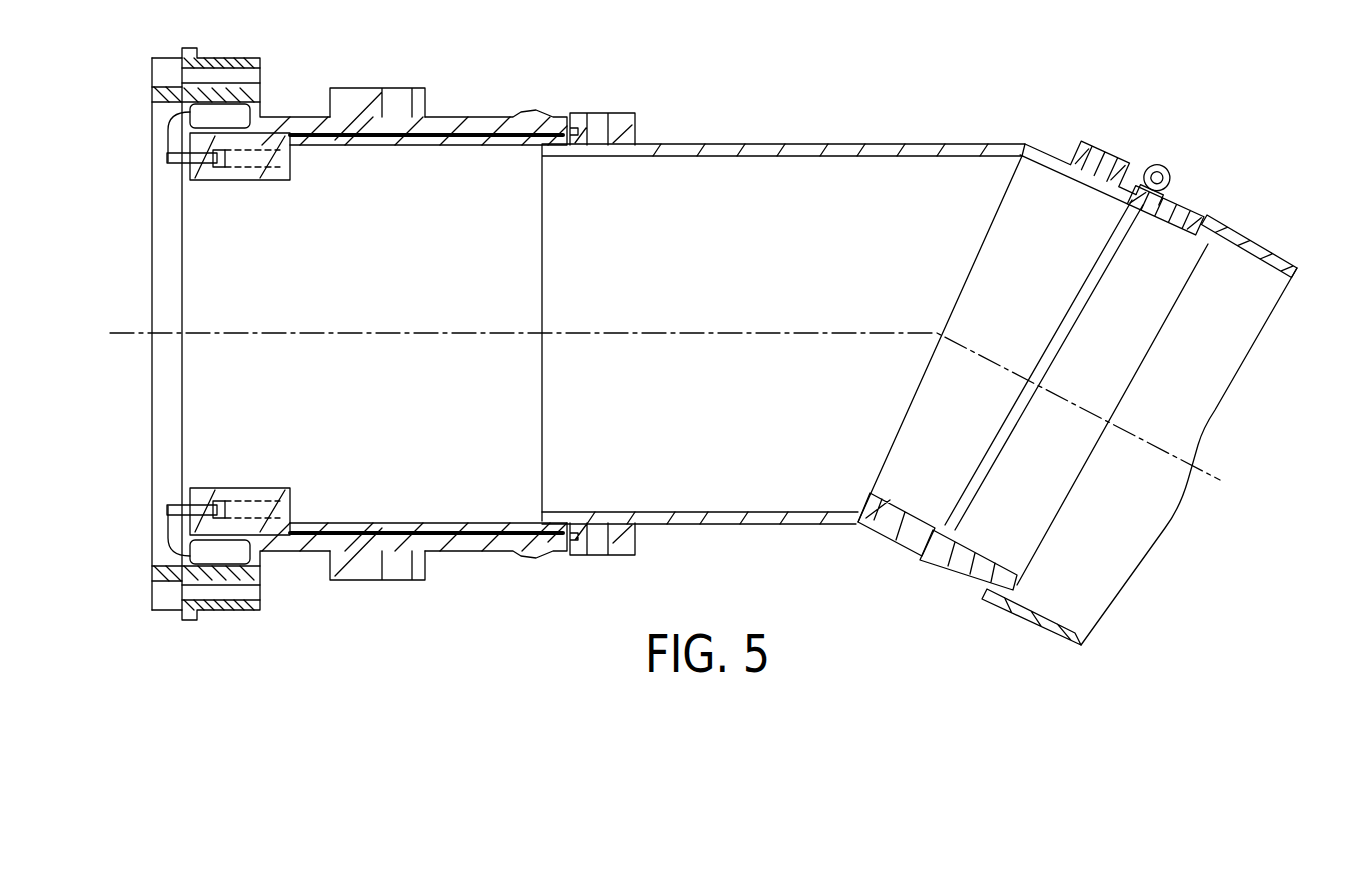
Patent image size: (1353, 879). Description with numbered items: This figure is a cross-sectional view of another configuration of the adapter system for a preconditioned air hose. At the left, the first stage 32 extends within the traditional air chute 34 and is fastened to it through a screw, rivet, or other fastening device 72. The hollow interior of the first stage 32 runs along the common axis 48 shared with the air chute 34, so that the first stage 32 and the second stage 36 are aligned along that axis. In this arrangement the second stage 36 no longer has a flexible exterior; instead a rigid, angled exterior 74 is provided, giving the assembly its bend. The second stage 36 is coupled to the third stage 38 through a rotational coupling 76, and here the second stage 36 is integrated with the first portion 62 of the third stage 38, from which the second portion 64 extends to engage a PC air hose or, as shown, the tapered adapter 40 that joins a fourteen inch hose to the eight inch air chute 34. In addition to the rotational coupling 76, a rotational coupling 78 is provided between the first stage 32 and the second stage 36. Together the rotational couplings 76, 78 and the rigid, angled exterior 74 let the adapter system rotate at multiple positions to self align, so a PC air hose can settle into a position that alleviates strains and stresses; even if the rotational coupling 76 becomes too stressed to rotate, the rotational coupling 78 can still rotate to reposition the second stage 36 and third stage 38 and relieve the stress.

The first stage 32 is at (612, 92).
The air chute 34 is at (389, 62).
The second stage 36 is at (860, 122).
The third stage 38 is at (1180, 150).
The tapered adapter 40 is at (1033, 622).
The common axis 48 is at (330, 335).
The first portion 62 is at (1087, 196).
The second portion 64 is at (1170, 230).
The fastening device 72 is at (168, 161).
The rigid, angled exterior 74 is at (768, 528).
The rotational coupling 76 is at (883, 550).
The rotational coupling 78 is at (598, 568).